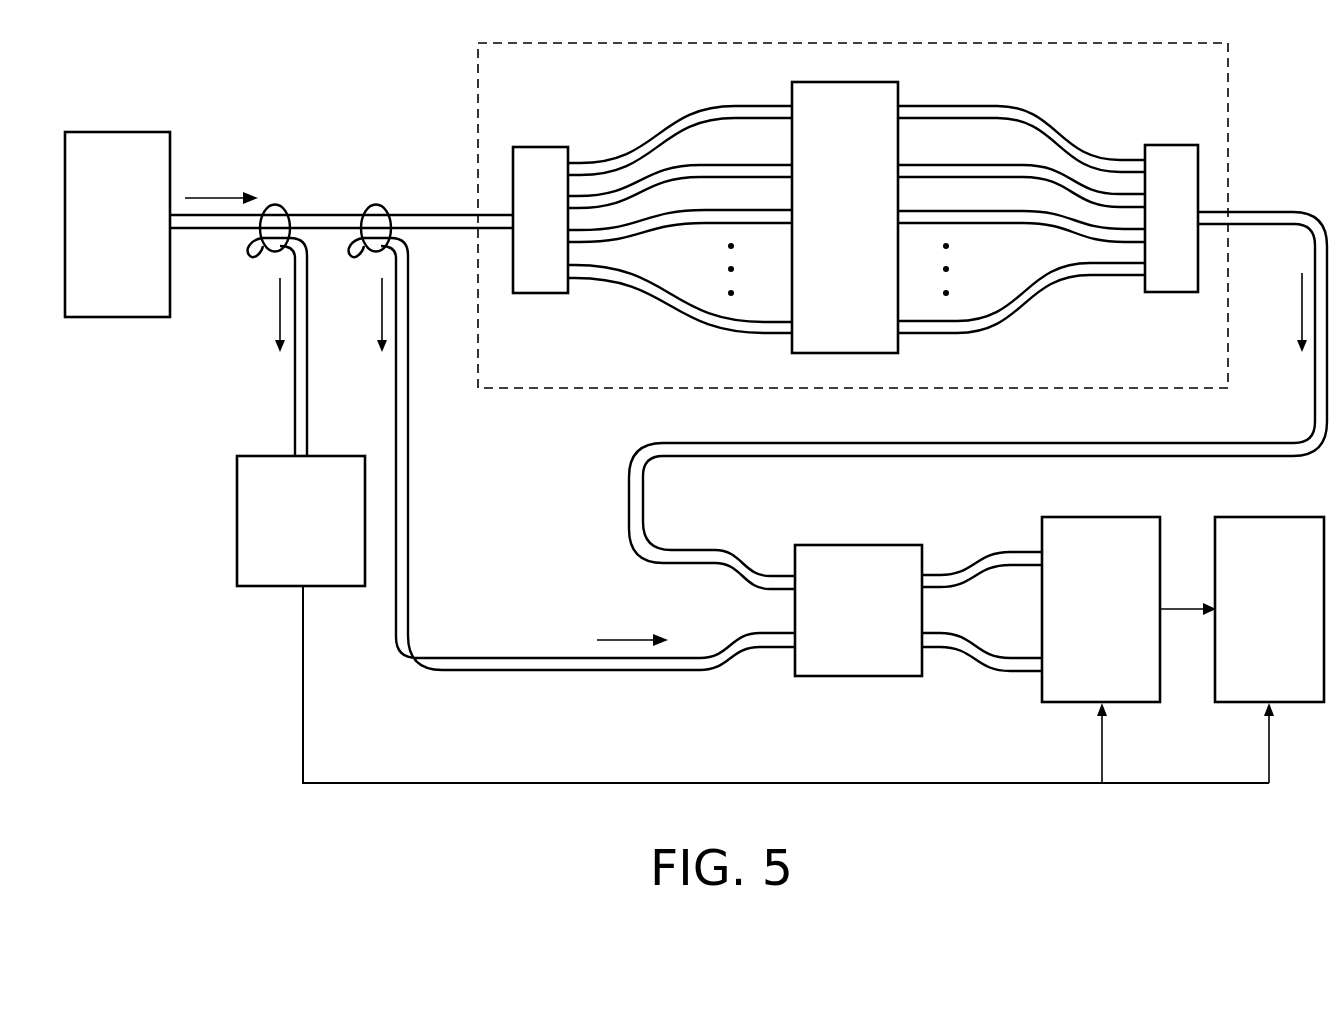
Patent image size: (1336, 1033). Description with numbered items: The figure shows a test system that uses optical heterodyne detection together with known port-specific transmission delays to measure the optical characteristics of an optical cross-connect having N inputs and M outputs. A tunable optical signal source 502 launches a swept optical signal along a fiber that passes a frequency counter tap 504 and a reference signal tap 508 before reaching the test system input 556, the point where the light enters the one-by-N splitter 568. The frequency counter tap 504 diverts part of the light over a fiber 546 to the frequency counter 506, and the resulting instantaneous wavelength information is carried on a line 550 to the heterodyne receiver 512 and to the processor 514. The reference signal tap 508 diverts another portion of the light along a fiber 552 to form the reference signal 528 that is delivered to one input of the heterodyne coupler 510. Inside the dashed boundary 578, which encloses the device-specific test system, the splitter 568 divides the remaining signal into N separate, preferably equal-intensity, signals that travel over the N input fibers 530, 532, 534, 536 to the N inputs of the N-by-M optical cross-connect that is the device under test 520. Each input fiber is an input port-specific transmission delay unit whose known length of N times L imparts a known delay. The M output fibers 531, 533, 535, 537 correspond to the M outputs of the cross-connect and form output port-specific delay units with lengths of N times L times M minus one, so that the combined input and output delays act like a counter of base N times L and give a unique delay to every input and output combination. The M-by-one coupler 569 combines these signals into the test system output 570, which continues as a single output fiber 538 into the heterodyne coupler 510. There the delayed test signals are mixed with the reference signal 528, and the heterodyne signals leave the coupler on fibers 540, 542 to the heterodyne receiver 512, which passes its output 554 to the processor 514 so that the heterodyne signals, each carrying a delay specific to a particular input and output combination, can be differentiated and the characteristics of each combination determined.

The tunable optical signal source 502 is at (136, 297).
The frequency counter tap 504 is at (275, 170).
The frequency counter 506 is at (321, 568).
The reference signal tap 508 is at (376, 170).
The heterodyne coupler 510 is at (877, 657).
The heterodyne receiver 512 is at (1120, 657).
The processor 514 is at (1289, 657).
The device under test 520 is at (864, 288).
The reference signal fiber 528 is at (493, 657).
The input fiber 530 is at (698, 114).
The output fiber 531 is at (1018, 110).
The input fiber 532 is at (678, 172).
The output fiber 533 is at (1032, 168).
The input fiber 534 is at (680, 222).
The output fiber 535 is at (1030, 223).
The input fiber 536 is at (700, 330).
The output fiber 537 is at (1055, 292).
The single output fiber 538 is at (629, 505).
The heterodyne coupler output fiber 540 is at (1003, 552).
The heterodyne coupler output fiber 542 is at (1003, 672).
The coupler output fiber to frequency counter 546 is at (270, 256).
The instantaneous wavelength information line 550 is at (497, 786).
The coupler output fiber reference path 552 is at (371, 256).
The receiver output signal line 554 is at (1181, 607).
The test system input 556 is at (512, 228).
The 1×N splitter 568 is at (540, 147).
The M×1 coupler 569 is at (1172, 145).
The test system output 570 is at (1202, 207).
The device under test assembly 578 is at (1228, 108).